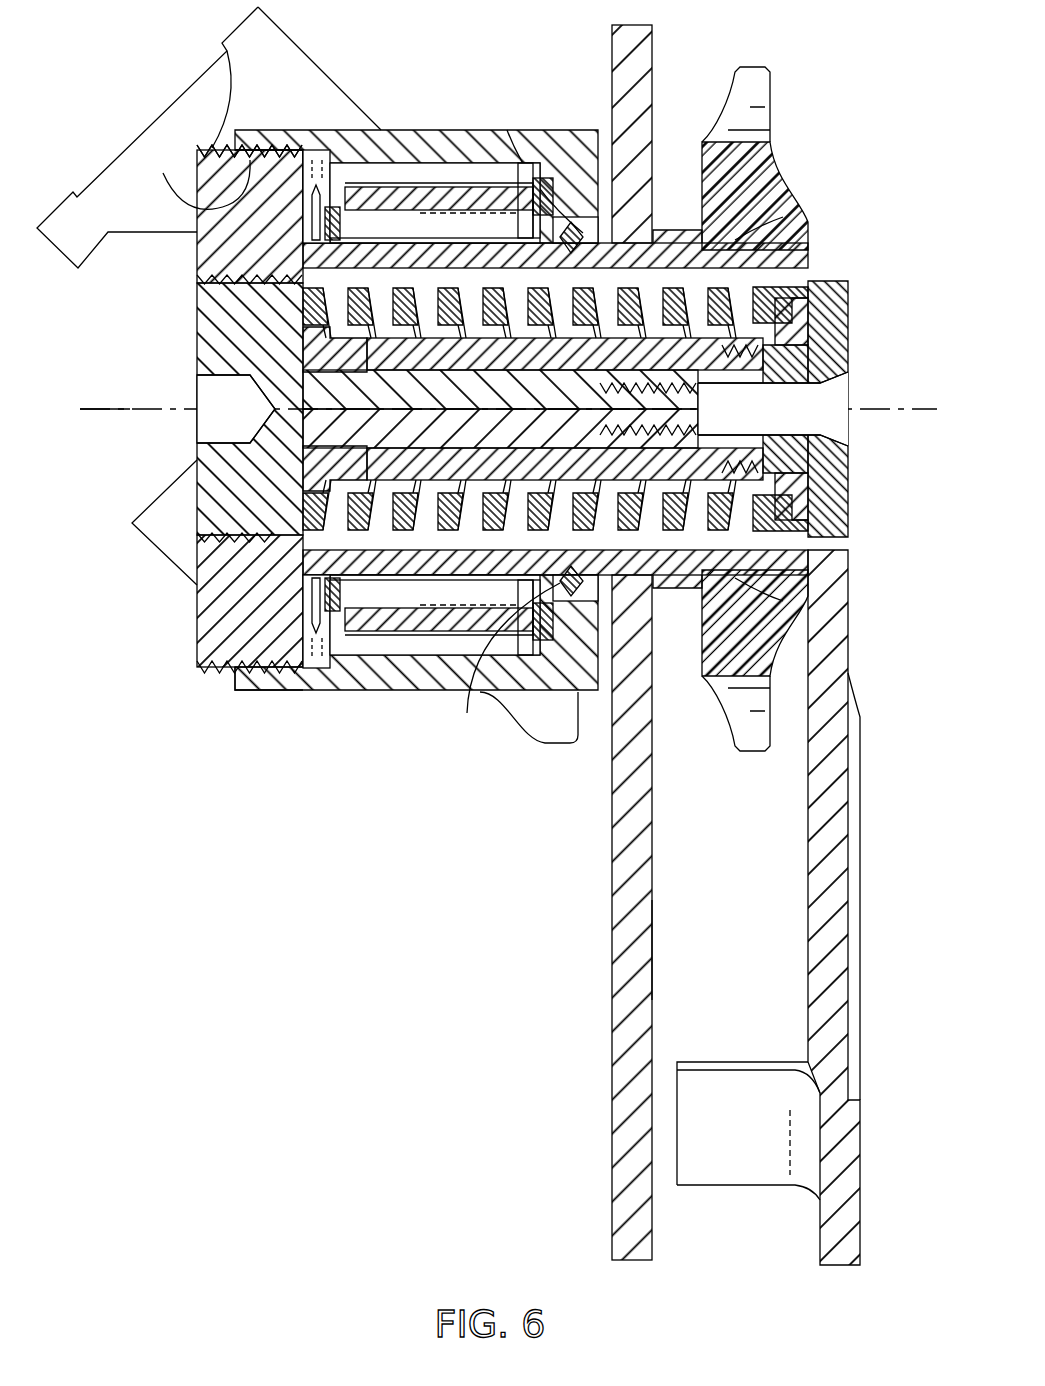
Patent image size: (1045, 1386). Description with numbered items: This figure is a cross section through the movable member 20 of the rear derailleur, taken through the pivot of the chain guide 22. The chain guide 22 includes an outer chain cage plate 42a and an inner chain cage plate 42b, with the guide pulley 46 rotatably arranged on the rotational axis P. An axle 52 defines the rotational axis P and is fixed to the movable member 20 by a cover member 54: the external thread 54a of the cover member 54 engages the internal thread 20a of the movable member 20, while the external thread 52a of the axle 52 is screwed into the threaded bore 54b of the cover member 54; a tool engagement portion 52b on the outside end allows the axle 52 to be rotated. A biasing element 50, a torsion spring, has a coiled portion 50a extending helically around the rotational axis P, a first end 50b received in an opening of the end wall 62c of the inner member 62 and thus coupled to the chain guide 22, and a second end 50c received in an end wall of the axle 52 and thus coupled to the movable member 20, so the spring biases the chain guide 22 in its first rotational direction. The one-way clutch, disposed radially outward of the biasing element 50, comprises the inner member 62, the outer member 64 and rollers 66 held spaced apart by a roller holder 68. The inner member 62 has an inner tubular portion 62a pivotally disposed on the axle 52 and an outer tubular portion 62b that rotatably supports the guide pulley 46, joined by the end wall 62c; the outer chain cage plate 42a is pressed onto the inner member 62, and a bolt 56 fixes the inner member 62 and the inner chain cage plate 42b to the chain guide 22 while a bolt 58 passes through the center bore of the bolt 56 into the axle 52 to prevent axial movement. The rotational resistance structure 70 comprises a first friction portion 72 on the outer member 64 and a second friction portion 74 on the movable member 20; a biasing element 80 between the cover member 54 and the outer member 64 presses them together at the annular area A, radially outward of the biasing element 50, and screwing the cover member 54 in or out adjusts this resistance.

The movable member 20 is at (192, 86).
The internal thread 20a is at (165, 180).
The chain guide 22 is at (609, 1082).
The outer chain cage plate 42a is at (656, 948).
The inner chain cage plate 42b is at (808, 975).
The guide pulley 46 is at (780, 188).
The biasing element 50 is at (675, 284).
The coiled portion 50a is at (785, 217).
The first end 50b is at (800, 295).
The second end 50c is at (290, 520).
The axle 52 is at (190, 434).
The external thread 52a is at (240, 268).
The tool engagement portion 52b is at (195, 378).
The cover member 54 is at (197, 635).
The external thread 54a is at (215, 150).
The threaded bore 54b is at (275, 298).
The bolt 56 is at (832, 475).
The bolt 58 is at (830, 395).
The inner member 62 is at (814, 262).
The inner tubular portion 62a is at (305, 345).
The outer tubular portion 62b is at (388, 230).
The end wall 62c is at (790, 325).
The outer member 64 is at (410, 205).
The roller 66 is at (446, 215).
The roller holder 68 is at (338, 625).
The rotational resistance structure 70 is at (543, 168).
The first friction portion 72 is at (530, 190).
The second friction portion 74 is at (567, 224).
The biasing element 80 is at (280, 682).
The area of rotational resistance A is at (509, 660).
The rotational axis P is at (82, 406).